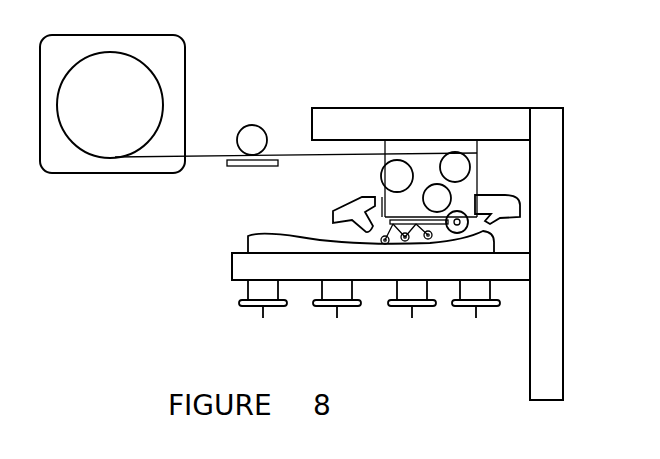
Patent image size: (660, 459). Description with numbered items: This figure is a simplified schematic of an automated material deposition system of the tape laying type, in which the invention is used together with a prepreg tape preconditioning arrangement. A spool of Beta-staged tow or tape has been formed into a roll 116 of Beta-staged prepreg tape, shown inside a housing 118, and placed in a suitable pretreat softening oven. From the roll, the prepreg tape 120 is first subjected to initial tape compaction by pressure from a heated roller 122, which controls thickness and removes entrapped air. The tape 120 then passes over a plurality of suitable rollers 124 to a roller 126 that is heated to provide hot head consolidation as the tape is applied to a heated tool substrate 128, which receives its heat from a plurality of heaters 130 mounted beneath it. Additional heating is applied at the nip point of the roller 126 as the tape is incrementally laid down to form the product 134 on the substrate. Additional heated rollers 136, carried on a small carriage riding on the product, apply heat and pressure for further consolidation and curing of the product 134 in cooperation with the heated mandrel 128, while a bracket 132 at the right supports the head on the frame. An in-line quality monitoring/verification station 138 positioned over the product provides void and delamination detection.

The roll of Beta-staged prepreg tape 116 is at (126, 116).
The reel housing 118 is at (58, 173).
The prepreg tape 120 is at (200, 163).
The heated roller 122 is at (257, 126).
The rollers 124 is at (456, 155).
The roller 126 is at (460, 212).
The heated tool substrate 128 is at (232, 268).
The heaters 130 is at (355, 307).
The bracket 132 is at (518, 224).
The product 134 is at (248, 252).
The heated rollers 136 is at (381, 238).
The in-line quality monitoring/verification station 138 is at (353, 203).